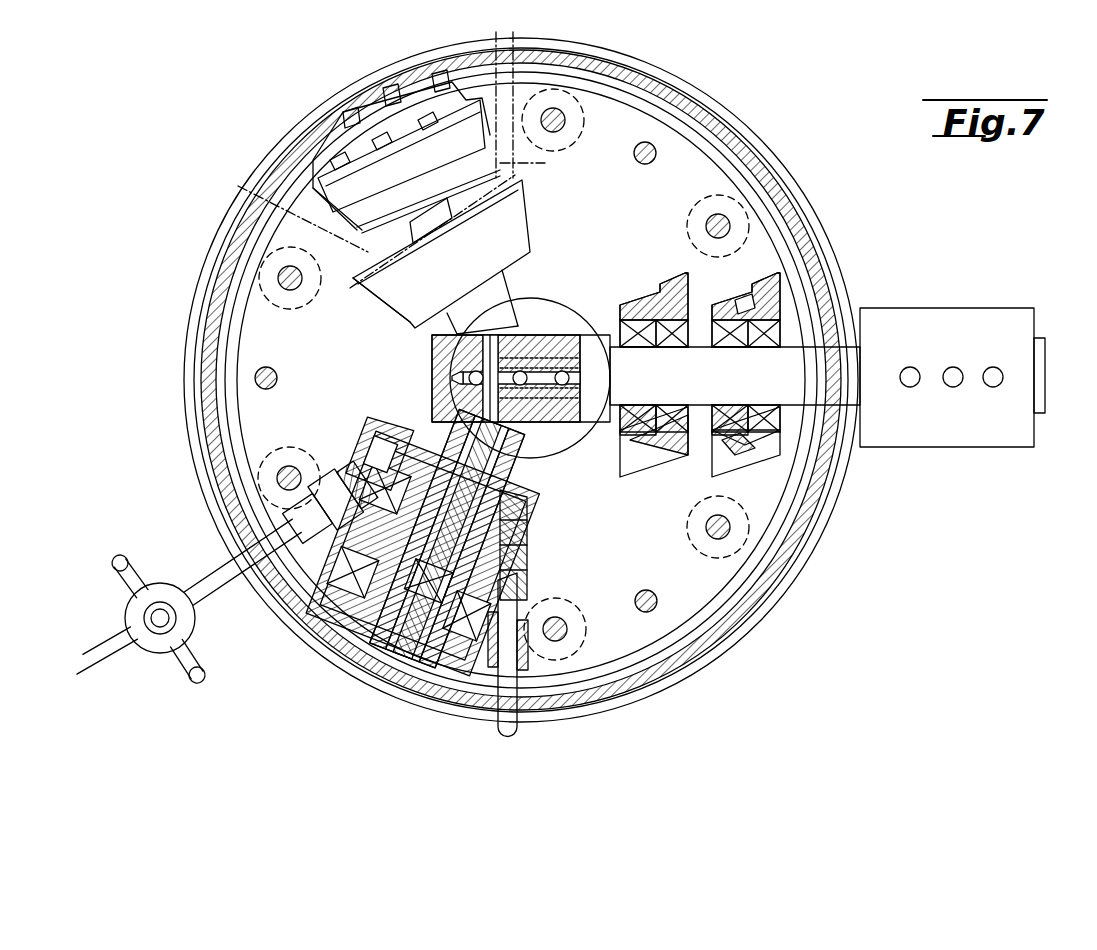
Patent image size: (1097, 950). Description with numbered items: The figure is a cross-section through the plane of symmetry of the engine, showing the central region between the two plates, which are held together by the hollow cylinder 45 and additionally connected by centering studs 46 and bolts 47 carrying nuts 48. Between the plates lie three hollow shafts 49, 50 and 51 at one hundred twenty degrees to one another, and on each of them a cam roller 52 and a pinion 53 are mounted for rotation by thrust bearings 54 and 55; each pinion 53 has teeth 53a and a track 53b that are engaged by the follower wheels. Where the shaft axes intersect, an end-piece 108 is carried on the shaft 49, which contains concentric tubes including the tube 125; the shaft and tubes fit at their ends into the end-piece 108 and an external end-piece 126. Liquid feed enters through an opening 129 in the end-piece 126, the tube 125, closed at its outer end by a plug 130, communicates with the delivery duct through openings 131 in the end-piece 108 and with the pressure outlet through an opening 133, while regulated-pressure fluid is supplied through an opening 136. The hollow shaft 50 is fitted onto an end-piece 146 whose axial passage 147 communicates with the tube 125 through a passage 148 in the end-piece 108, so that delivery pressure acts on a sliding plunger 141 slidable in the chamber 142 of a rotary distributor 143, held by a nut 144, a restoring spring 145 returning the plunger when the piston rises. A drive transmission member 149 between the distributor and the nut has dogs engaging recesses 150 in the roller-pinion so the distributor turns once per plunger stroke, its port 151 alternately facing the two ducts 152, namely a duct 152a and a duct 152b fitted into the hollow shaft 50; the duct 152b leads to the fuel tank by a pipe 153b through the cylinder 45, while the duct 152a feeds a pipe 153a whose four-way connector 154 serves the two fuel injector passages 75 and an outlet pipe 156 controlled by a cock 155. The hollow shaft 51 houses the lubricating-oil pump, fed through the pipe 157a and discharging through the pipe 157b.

The hollow cylinder 45 is at (700, 650).
The centering studs 46 is at (656, 150).
The bolts 47 is at (566, 118).
The nuts 48 is at (580, 131).
The hollow shaft 49 is at (735, 376).
The hollow shaft 50 is at (538, 540).
The hollow shaft 51 is at (431, 220).
The cam roller 52 is at (578, 577).
The pinion 53 is at (313, 168).
The teeth 53a is at (401, 156).
The track 53b is at (353, 280).
The thrust bearing 54 is at (641, 328).
The thrust bearing 55 is at (732, 327).
The fuel injector passages 75 is at (124, 554).
The end-piece 108 is at (443, 351).
The tube 125 is at (560, 333).
The external end-piece 126 is at (951, 450).
The opening 129 is at (907, 367).
The plug 130 is at (1041, 396).
The openings 131 is at (467, 378).
The opening 133 is at (996, 367).
The opening 136 is at (953, 367).
The sliding plunger 141 is at (532, 500).
The chamber 142 is at (292, 570).
The rotary distributor 143 is at (380, 676).
The nut 144 is at (348, 660).
The restoring spring 145 is at (392, 452).
The end-piece 146 is at (518, 441).
The axial passage 147 is at (505, 461).
The passage 148 is at (488, 402).
The drive transmission member 149 is at (435, 686).
The recesses 150 is at (385, 100).
The port 151 is at (530, 557).
The bearing race 152 is at (357, 485).
The duct 152a is at (342, 490).
The duct 152b is at (520, 597).
The pipe 153a is at (222, 574).
The pipe 153b is at (497, 720).
The four-way connector 154 is at (186, 626).
The cock 155 is at (150, 617).
The outlet pipe 156 is at (95, 660).
The pipe 157a is at (543, 105).
The pipe 157b is at (232, 180).